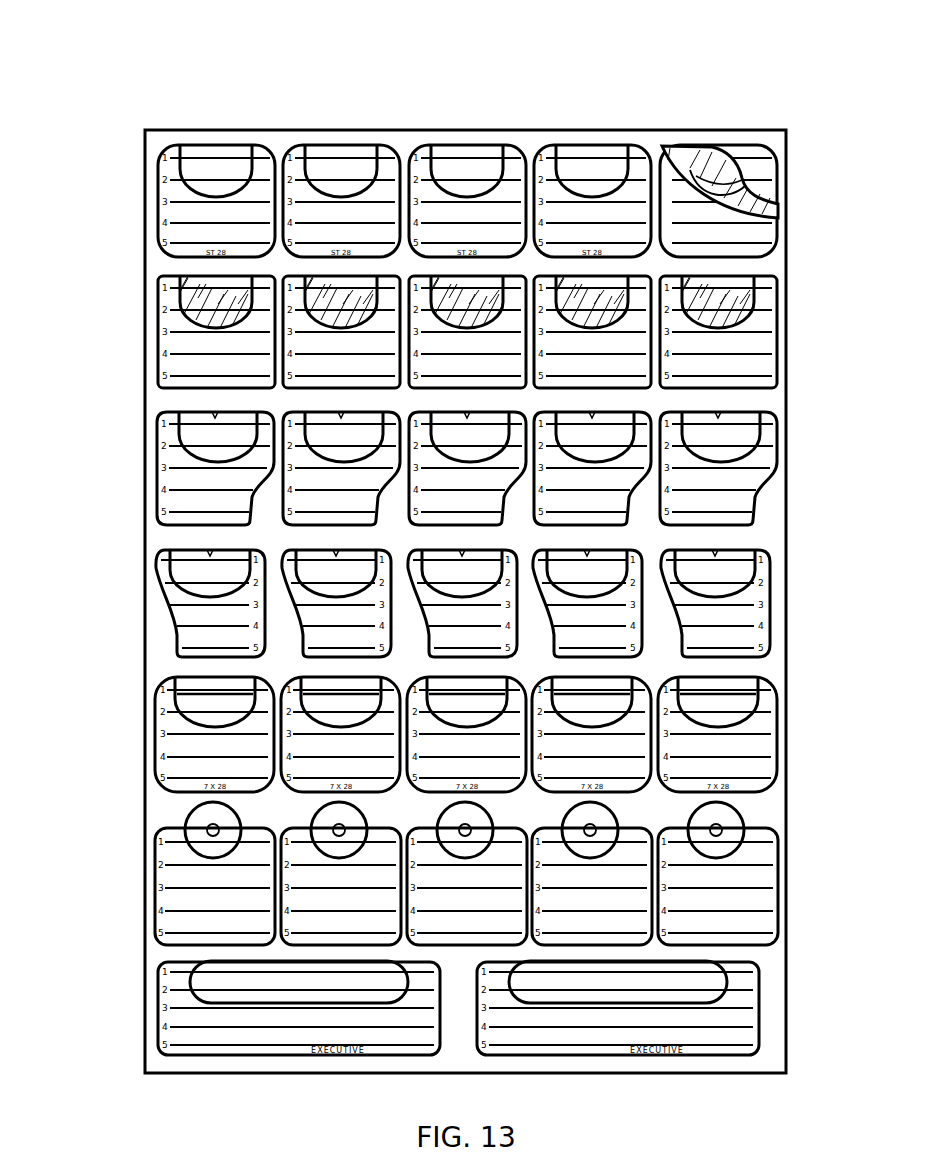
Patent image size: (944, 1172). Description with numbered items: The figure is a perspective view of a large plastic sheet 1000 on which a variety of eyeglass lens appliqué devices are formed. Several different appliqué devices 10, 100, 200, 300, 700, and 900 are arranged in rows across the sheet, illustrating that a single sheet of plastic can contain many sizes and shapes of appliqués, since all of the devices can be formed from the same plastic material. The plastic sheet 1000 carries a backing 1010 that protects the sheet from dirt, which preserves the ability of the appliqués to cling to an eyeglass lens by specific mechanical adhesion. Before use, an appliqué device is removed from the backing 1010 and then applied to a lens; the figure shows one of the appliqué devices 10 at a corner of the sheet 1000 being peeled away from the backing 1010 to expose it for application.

The lens appliqué device 10 is at (163, 218).
The lens appliqué device 100 is at (165, 352).
The lens appliqué device 200 is at (160, 470).
The lens appliqué device 300 is at (176, 735).
The lens appliqué device 700 is at (153, 867).
The lens appliqué device 900 is at (158, 1022).
The plastic sheet 1000 is at (185, 73).
The backing 1010 is at (733, 163).